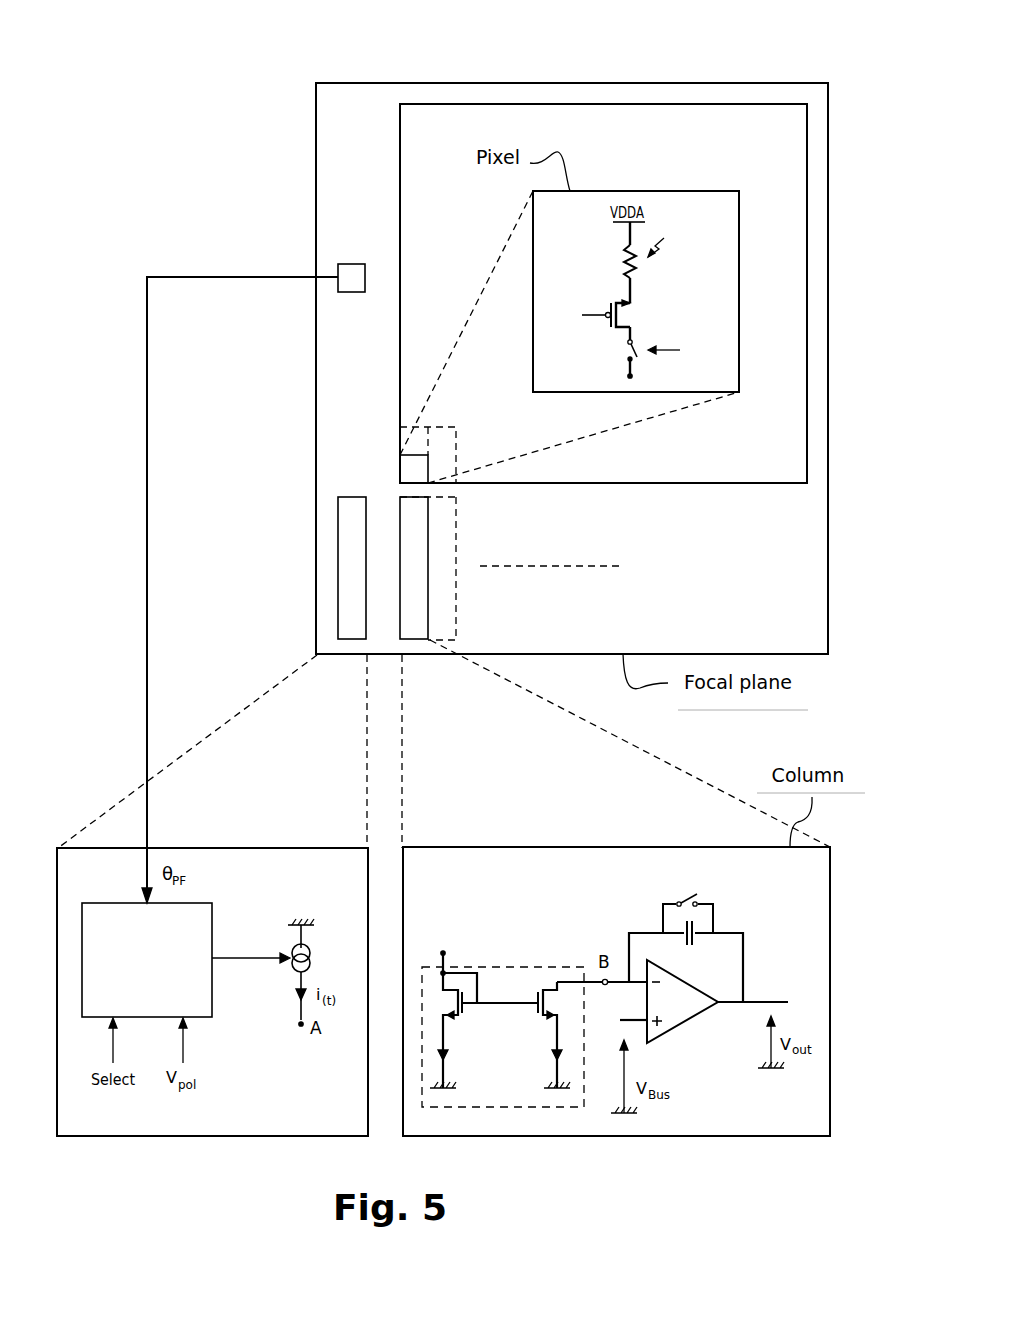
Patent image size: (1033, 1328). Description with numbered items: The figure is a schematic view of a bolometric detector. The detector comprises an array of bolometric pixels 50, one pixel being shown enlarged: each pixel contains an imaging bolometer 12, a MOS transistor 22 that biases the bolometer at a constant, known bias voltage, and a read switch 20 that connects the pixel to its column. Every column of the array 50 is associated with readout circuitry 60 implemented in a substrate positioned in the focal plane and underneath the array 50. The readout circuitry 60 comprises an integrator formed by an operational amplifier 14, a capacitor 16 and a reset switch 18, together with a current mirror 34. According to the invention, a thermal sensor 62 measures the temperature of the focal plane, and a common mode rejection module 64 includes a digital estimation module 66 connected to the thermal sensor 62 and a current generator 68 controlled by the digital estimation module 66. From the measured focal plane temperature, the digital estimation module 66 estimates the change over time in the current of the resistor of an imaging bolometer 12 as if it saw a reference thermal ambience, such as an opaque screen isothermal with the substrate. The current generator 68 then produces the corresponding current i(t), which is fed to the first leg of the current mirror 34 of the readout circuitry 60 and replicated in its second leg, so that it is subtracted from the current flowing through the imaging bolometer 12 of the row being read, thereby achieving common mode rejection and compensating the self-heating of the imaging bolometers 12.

The array of bolometric pixels 50 is at (683, 104).
The thermal sensor 62 is at (343, 266).
The imaging bolometer 12 is at (637, 265).
The MOS transistor 22 is at (612, 305).
The read switch 20 is at (625, 348).
The digital estimation module 66 is at (100, 903).
The current generator 68 is at (310, 947).
The readout circuitry 60 is at (493, 847).
The reset switch 18 is at (707, 903).
The capacitor 16 is at (702, 933).
The operational amplifier 14 is at (690, 1015).
The current mirror 34 is at (496, 1107).
The common mode rejection module 64 is at (128, 1136).